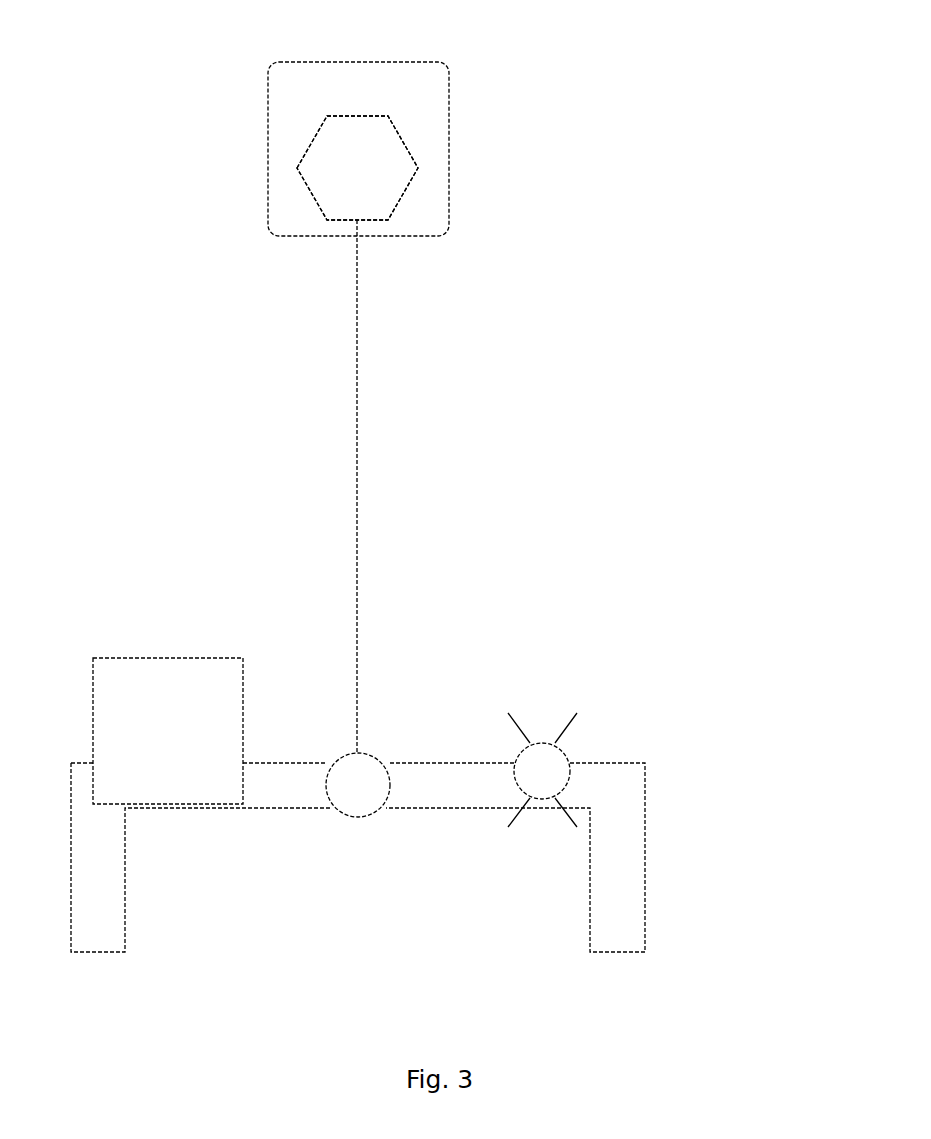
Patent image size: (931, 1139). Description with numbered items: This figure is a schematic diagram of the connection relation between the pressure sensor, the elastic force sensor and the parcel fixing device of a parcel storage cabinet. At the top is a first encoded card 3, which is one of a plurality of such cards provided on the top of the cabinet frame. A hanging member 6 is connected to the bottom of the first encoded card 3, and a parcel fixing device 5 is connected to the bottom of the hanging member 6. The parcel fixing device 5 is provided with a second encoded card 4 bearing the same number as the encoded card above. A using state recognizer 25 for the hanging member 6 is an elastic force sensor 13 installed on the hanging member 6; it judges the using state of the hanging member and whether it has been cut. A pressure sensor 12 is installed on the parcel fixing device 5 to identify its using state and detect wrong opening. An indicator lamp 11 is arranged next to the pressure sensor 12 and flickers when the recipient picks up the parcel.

The first encoded card 3 is at (449, 92).
The elastic force sensor 13 is at (375, 159).
The using state recognizer for the hanging member 25 is at (375, 185).
The hanging member 6 is at (360, 353).
The second encoded card 4 is at (157, 668).
The parcel fixing device 5 is at (646, 866).
The pressure sensor 12 is at (365, 767).
The indicator lamp 11 is at (555, 760).